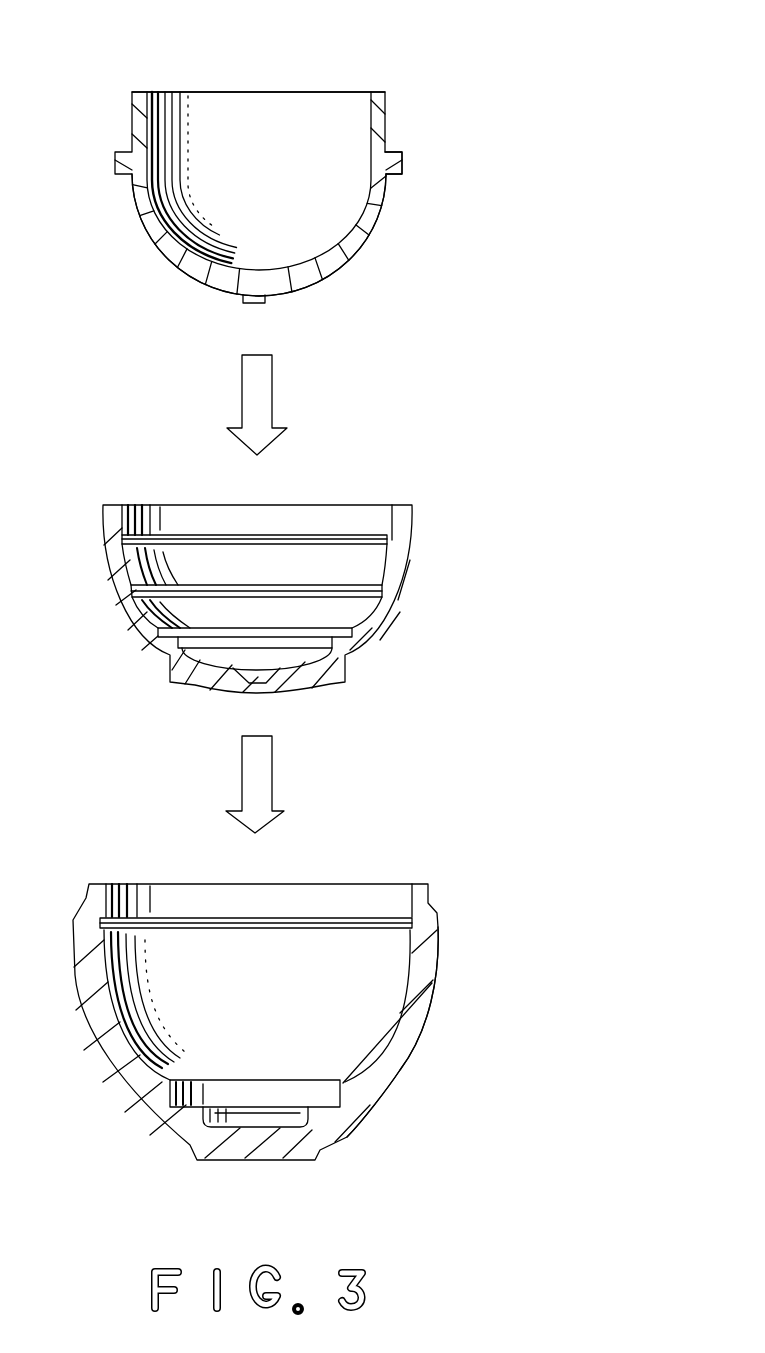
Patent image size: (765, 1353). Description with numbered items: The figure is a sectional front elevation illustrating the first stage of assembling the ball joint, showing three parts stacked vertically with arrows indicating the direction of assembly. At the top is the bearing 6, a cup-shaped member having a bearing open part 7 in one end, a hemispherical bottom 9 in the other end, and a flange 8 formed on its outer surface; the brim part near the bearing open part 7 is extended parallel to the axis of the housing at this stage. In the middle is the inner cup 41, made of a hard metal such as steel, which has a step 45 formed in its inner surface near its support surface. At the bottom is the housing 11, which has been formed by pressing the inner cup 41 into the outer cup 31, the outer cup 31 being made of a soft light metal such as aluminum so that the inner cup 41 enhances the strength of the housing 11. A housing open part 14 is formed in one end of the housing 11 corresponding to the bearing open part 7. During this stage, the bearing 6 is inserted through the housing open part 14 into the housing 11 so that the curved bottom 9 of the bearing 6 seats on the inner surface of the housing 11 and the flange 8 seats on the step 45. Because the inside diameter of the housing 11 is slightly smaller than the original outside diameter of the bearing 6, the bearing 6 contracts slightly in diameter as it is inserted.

The bearing 6 is at (435, 97).
The bearing open part 7 is at (272, 92).
The flange 8 is at (403, 152).
The hemispherical bottom 9 is at (332, 273).
The inner cup 41 is at (392, 580).
The step 45 is at (387, 538).
The housing 11 is at (526, 806).
The housing open part 14 is at (333, 884).
The outer cup 31 is at (367, 1110).